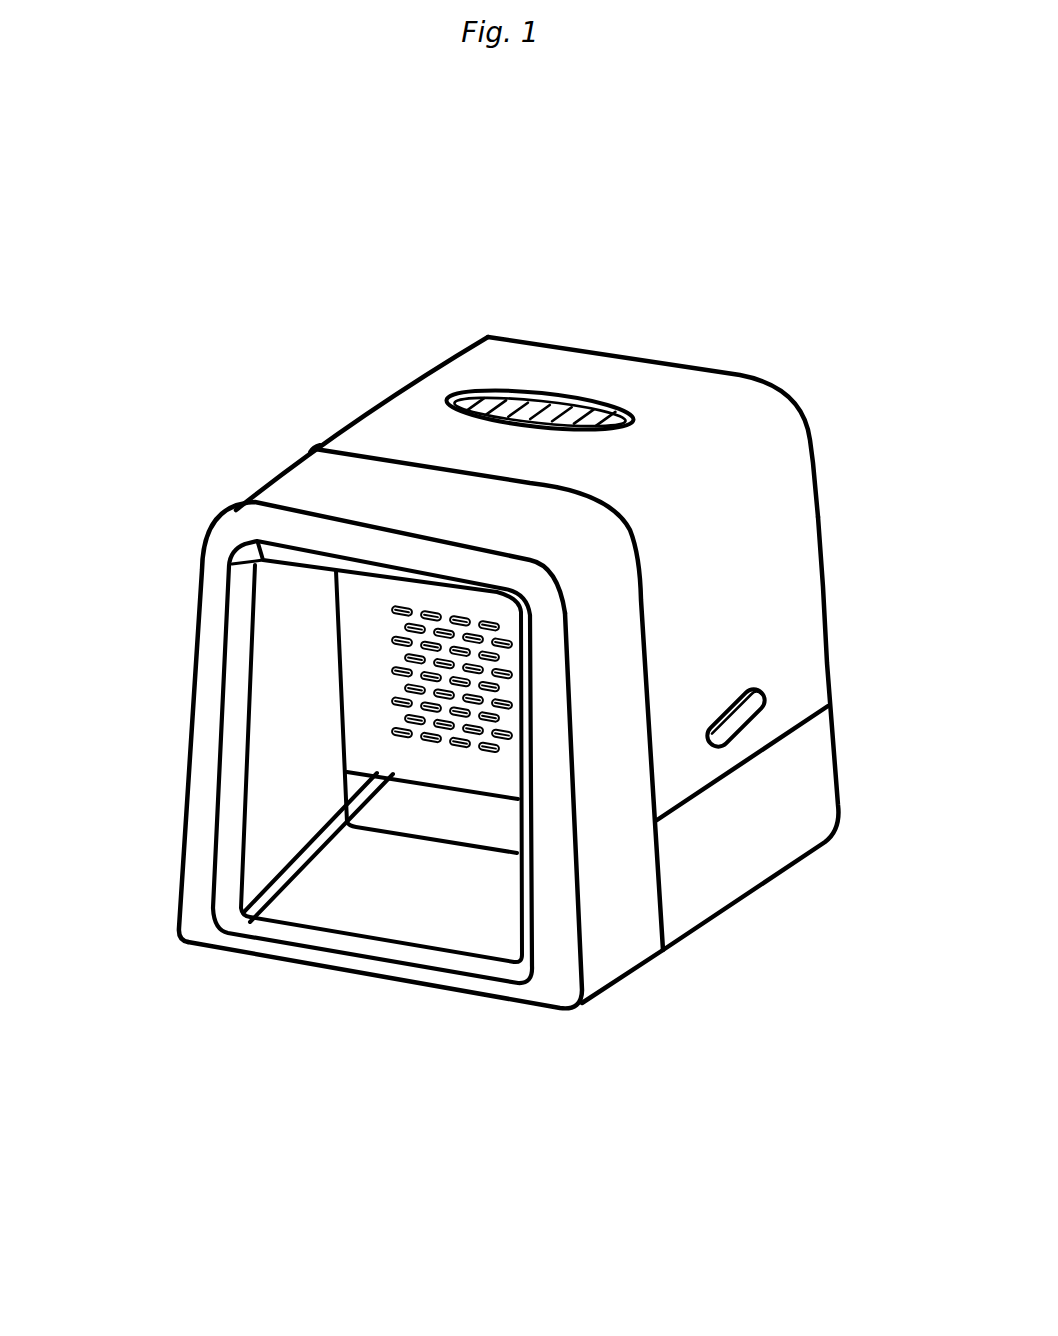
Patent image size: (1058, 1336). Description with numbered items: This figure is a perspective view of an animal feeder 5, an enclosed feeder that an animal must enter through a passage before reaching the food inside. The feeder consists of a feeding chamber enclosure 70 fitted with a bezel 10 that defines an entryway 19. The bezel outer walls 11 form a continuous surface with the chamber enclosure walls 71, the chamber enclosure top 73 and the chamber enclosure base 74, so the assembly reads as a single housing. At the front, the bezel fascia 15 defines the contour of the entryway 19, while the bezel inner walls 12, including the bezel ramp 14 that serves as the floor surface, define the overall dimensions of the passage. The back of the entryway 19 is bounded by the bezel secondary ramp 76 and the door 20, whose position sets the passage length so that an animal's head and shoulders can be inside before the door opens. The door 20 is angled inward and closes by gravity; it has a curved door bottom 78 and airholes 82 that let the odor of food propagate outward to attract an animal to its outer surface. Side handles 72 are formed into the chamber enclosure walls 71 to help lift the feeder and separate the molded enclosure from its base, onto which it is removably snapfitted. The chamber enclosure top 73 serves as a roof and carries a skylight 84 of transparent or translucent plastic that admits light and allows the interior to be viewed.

The animal feeder 5 is at (322, 352).
The bezel 10 is at (245, 455).
The bezel outer walls 11 is at (618, 918).
The bezel inner walls 12 is at (264, 760).
The bezel ramp 14 is at (347, 896).
The bezel fascia 15 is at (553, 965).
The entryway 19 is at (410, 802).
The door 20 is at (372, 610).
The feeding chamber enclosure 70 is at (737, 433).
The chamber enclosure walls 71 is at (770, 572).
The side handles 72 is at (767, 707).
The chamber enclosure top 73 is at (497, 353).
The chamber enclosure base 74 is at (788, 822).
The bezel secondary ramp 76 is at (483, 823).
The curved door bottom 78 is at (393, 749).
The airholes 82 is at (403, 650).
The skylight 84 is at (567, 398).